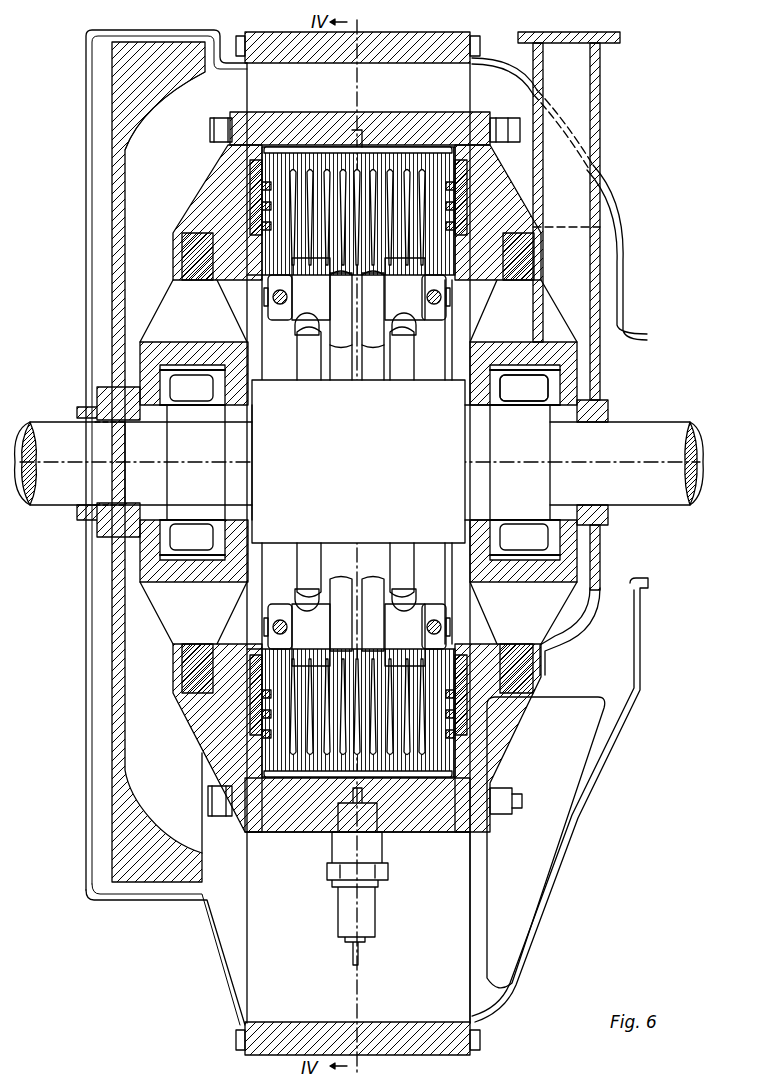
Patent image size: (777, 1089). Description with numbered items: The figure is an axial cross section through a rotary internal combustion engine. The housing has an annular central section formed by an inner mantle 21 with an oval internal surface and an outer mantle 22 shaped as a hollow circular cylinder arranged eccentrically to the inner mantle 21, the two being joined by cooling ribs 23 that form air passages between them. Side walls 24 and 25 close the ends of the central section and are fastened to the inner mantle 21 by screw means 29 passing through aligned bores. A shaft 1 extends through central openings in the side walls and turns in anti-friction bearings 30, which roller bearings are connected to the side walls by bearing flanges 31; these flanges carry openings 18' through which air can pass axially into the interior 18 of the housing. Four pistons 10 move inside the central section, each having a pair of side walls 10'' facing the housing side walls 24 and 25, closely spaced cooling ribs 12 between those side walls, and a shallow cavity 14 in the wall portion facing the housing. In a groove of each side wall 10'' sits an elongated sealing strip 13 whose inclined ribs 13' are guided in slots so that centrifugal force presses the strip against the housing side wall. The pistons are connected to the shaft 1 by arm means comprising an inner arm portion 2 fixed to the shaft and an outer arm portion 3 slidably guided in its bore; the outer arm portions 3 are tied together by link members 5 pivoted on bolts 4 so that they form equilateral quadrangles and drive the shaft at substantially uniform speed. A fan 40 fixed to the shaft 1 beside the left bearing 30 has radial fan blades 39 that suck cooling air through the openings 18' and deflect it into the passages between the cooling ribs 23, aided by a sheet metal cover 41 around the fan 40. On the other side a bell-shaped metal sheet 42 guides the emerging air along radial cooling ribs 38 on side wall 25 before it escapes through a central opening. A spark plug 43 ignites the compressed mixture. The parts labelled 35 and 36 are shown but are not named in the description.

The shaft 1 is at (54, 428).
The inner arm portion 2 is at (302, 368).
The outer arm portion 3 is at (307, 600).
The bolts 4 is at (261, 300).
The link members 5 is at (283, 308).
The pistons 10 is at (358, 178).
The side walls of piston 10'' is at (357, 241).
The cooling ribs 12 is at (318, 248).
The sealing strip 13 is at (331, 180).
The ribs of sealing strip 13' is at (493, 199).
The shallow cavity 14 is at (432, 805).
The interior of the central section of the housing 18 is at (456, 462).
The openings in bearing flanges 18' is at (358, 462).
The inner mantle 21 is at (270, 824).
The outer mantle 22 is at (264, 1030).
The cooling ribs 23 is at (465, 968).
The side wall 24 is at (233, 822).
The side wall 25 is at (477, 840).
The screw means 29 is at (504, 793).
The anti-friction bearing 30 is at (537, 388).
The bearing flanges 31 is at (538, 342).
The support bracket 35 is at (578, 70).
The bracket bend 36 is at (588, 628).
The radial cooling ribs 38 is at (603, 197).
The fan blades 39 is at (200, 104).
The fan 40 is at (112, 84).
The sheet metal cover 41 is at (99, 898).
The bell-shaped metal sheet 42 is at (623, 305).
The spark plug 43 is at (367, 922).